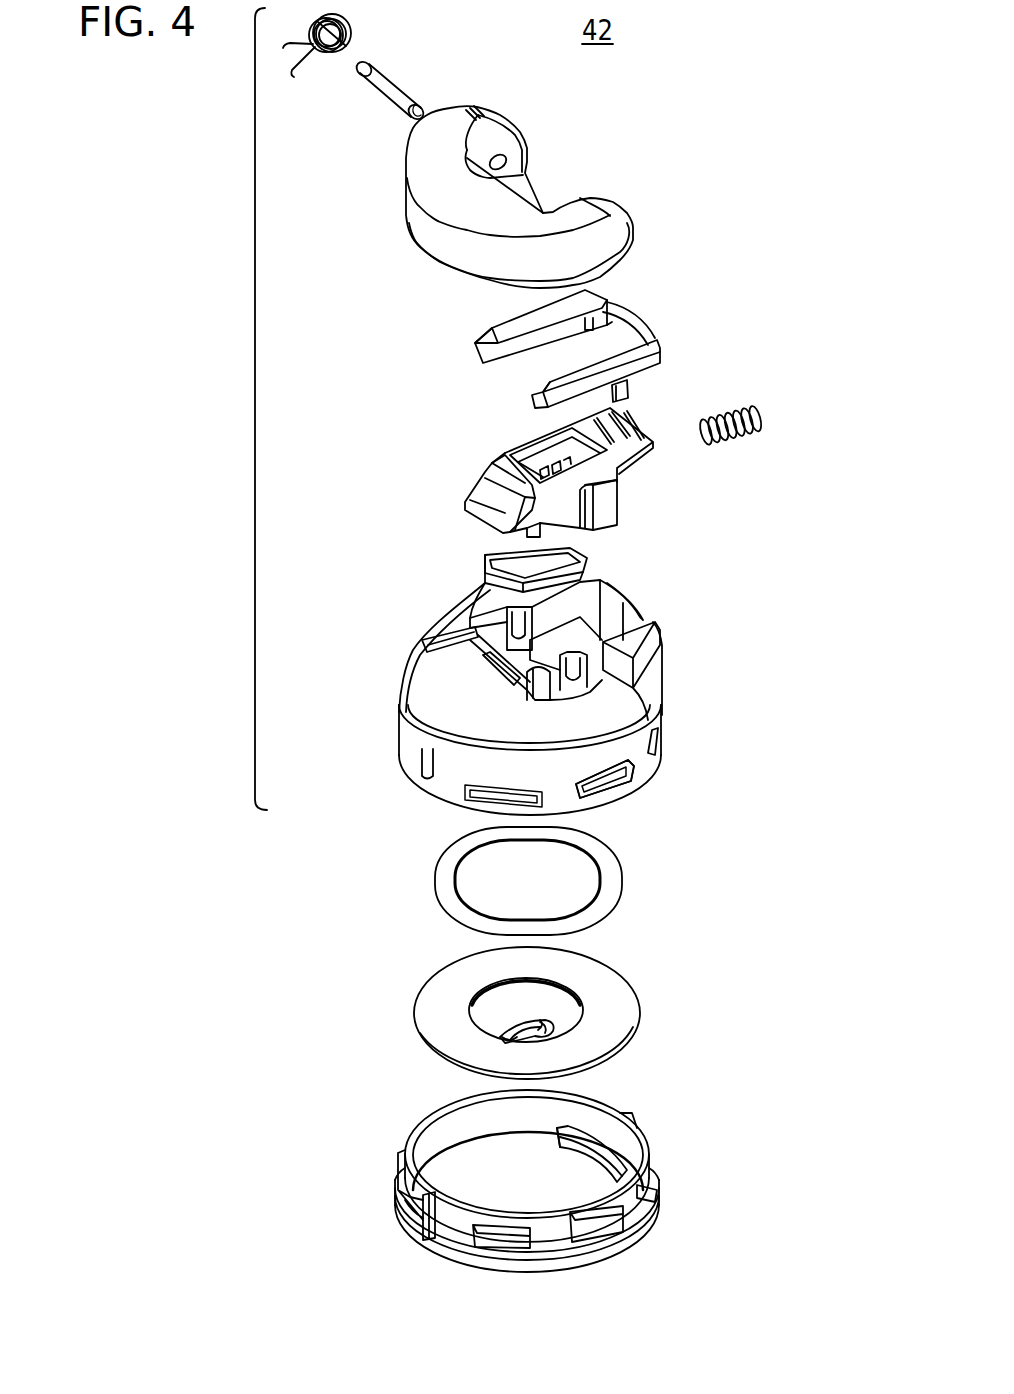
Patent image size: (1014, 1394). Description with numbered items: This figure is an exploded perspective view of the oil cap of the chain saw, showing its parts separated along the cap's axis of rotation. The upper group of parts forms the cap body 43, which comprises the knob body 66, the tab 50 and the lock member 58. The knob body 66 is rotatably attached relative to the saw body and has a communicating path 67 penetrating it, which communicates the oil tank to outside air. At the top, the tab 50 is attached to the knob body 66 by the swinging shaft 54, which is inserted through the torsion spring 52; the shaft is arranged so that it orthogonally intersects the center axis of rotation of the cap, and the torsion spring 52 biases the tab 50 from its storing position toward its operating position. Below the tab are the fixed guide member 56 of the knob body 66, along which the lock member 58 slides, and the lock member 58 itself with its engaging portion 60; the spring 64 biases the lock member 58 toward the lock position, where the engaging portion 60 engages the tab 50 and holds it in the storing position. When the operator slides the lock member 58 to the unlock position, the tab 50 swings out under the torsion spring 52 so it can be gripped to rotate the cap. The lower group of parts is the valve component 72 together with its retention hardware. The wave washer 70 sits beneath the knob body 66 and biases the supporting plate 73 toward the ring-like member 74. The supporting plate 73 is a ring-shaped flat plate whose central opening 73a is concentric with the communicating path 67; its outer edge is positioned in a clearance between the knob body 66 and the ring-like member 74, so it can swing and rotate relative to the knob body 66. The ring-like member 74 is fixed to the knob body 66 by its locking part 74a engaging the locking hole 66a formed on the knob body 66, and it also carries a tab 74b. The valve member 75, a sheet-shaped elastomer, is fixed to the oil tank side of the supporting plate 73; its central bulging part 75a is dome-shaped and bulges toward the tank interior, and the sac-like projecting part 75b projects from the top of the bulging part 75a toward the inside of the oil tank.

The cap body 43 is at (255, 430).
The tab 50 is at (607, 208).
The torsion spring 52 is at (340, 20).
The swinging shaft 54 is at (400, 78).
The guide member 56 is at (652, 345).
The lock member 58 is at (523, 442).
The engaging portion 60 is at (492, 502).
The spring 64 is at (735, 425).
The knob body 66 is at (401, 723).
The locking hole 66a is at (632, 782).
The communicating path 67 is at (413, 648).
The wave washer 70 is at (448, 877).
The valve component 72 is at (516, 994).
The supporting plate 73 is at (618, 1010).
The opening 73a is at (505, 990).
The ring-like member 74 is at (540, 1180).
The locking part 74a is at (600, 1225).
The hook tab 74b is at (560, 1143).
The valve member 75 is at (552, 1010).
The bulging part 75a is at (498, 1013).
The projecting part 75b is at (517, 1026).